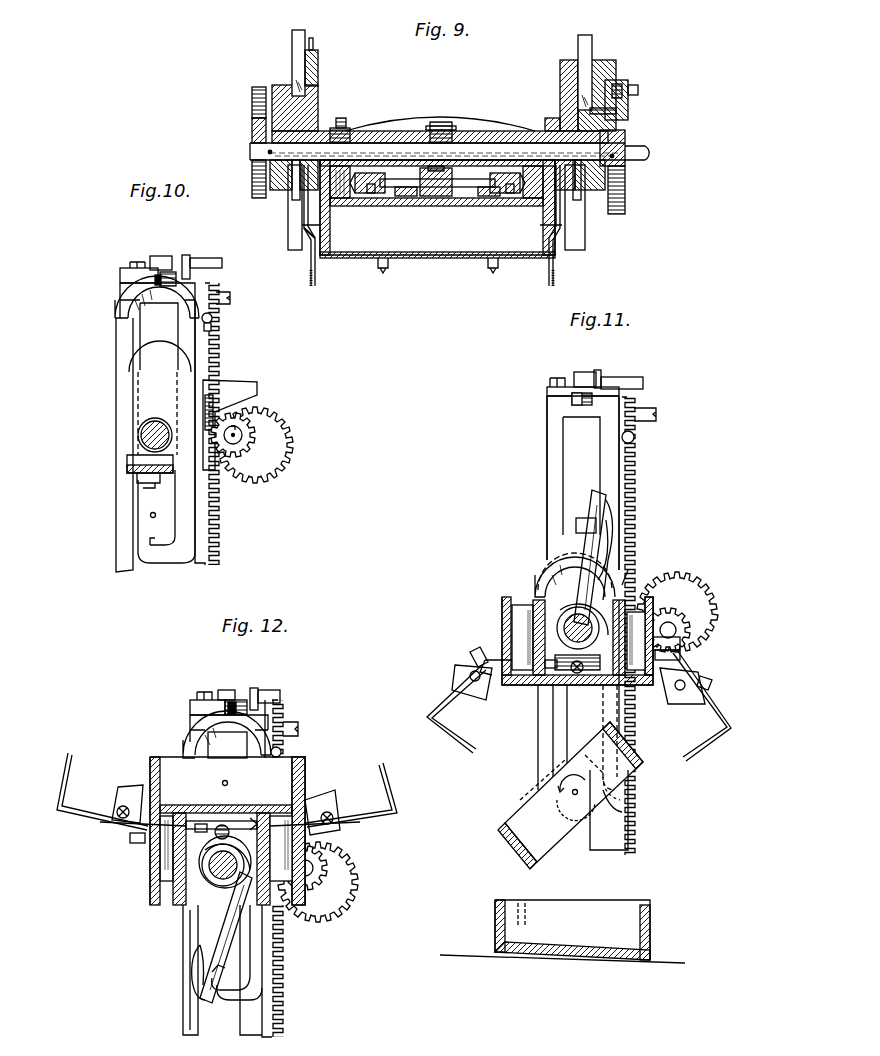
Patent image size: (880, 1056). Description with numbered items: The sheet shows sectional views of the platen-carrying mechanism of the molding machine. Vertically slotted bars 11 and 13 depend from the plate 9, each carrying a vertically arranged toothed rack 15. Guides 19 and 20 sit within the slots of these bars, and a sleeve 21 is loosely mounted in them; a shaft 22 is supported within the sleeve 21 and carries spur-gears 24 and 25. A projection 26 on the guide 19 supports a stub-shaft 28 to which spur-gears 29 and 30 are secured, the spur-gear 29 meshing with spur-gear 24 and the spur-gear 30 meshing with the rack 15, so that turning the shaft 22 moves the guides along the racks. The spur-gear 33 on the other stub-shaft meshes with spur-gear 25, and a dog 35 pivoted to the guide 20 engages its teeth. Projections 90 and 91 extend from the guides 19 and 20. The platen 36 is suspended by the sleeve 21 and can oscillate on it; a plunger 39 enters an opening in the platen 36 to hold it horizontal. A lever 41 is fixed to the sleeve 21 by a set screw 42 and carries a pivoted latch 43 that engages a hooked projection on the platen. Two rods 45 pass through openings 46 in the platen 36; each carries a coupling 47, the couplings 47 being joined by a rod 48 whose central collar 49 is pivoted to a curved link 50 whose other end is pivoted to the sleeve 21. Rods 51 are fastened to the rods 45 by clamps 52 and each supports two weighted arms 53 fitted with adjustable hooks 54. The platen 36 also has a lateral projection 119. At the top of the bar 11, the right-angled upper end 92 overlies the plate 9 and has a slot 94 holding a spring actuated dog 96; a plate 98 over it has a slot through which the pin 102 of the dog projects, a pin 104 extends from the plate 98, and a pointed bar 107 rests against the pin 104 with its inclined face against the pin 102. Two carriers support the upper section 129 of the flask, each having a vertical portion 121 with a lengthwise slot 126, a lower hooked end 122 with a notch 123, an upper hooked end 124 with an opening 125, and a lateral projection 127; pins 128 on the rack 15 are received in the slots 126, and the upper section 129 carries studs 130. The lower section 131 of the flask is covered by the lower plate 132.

In FIG. 10, the plate 9 is at (231, 299).
In FIG. 11, the plate 9 is at (657, 417).
In FIG. 12, the plate 9 is at (299, 730).
In FIG. 9, the vertically slotted bar 11 is at (288, 238).
In FIG. 10, the vertically slotted bar 11 is at (116, 341).
In FIG. 11, the vertically slotted bar 11 is at (545, 473).
In FIG. 12, the vertically slotted bar 11 is at (183, 952).
In FIG. 9, the vertically slotted bar 13 is at (585, 238).
In FIG. 10, the toothed rack 15 is at (218, 352).
In FIG. 11, the toothed rack 15 is at (636, 476).
In FIG. 12, the toothed rack 15 is at (284, 963).
In FIG. 9, the guide 19 is at (294, 82).
In FIG. 9, the guide 20 is at (590, 88).
In FIG. 9, the sleeve 21 is at (475, 133).
In FIG. 10, the sleeve 21 is at (148, 433).
In FIG. 11, the sleeve 21 is at (570, 618).
In FIG. 12, the sleeve 21 is at (208, 865).
In FIG. 9, the shaft 22 is at (398, 130).
In FIG. 10, the shaft 22 is at (148, 440).
In FIG. 11, the shaft 22 is at (566, 625).
In FIG. 12, the shaft 22 is at (215, 878).
In FIG. 9, the spur-gear 24 is at (250, 157).
In FIG. 9, the spur-gear 25 is at (624, 172).
In FIG. 10, the projection 26 is at (312, 455).
In FIG. 11, the projection 26 is at (677, 612).
In FIG. 12, the projection 26 is at (312, 900).
In FIG. 10, the stub-shaft 28 is at (240, 436).
In FIG. 11, the stub-shaft 28 is at (678, 633).
In FIG. 12, the stub-shaft 28 is at (310, 868).
In FIG. 10, the spur-gear 29 is at (272, 405).
In FIG. 11, the spur-gear 29 is at (694, 594).
In FIG. 12, the spur-gear 29 is at (356, 876).
In FIG. 10, the spur-gear 30 is at (243, 441).
In FIG. 11, the spur-gear 30 is at (676, 622).
In FIG. 12, the spur-gear 30 is at (318, 880).
In FIG. 9, the spur-gear 33 is at (626, 200).
In FIG. 9, the dog 35 is at (622, 80).
In FIG. 9, the platen 36 is at (432, 257).
In FIG. 11, the platen 36 is at (502, 598).
In FIG. 12, the platen 36 is at (150, 862).
In FIG. 9, the plunger 39 is at (252, 193).
In FIG. 9, the lever 41 is at (348, 126).
In FIG. 11, the lever 41 is at (596, 496).
In FIG. 12, the lever 41 is at (206, 1000).
In FIG. 9, the set screw 42 is at (342, 118).
In FIG. 11, the latch 43 is at (610, 512).
In FIG. 12, the latch 43 is at (190, 983).
In FIG. 9, the rod 45 is at (357, 196).
In FIG. 11, the rod 45 is at (490, 660).
In FIG. 12, the rod 45 is at (256, 818).
In FIG. 9, the opening 46 is at (371, 197).
In FIG. 9, the coupling 47 is at (390, 199).
In FIG. 11, the coupling 47 is at (586, 672).
In FIG. 12, the coupling 47 is at (238, 820).
In FIG. 9, the rod 48 is at (446, 192).
In FIG. 11, the rod 48 is at (570, 690).
In FIG. 12, the rod 48 is at (222, 818).
In FIG. 9, the collar 49 is at (430, 200).
In FIG. 11, the collar 49 is at (556, 688).
In FIG. 9, the curved link 50 is at (442, 122).
In FIG. 11, the curved link 50 is at (540, 688).
In FIG. 12, the curved link 50 is at (235, 848).
In FIG. 11, the rod 51 is at (462, 692).
In FIG. 12, the rod 51 is at (116, 808).
In FIG. 11, the clamp 52 is at (470, 656).
In FIG. 11, the weighted arm 53 is at (488, 698).
In FIG. 12, the weighted arm 53 is at (125, 787).
In FIG. 9, the hook 54 is at (436, 271).
In FIG. 11, the hook 54 is at (730, 735).
In FIG. 12, the hook 54 is at (60, 804).
In FIG. 9, the projection 90 is at (318, 67).
In FIG. 10, the projection 90 is at (130, 368).
In FIG. 11, the projection 90 is at (558, 554).
In FIG. 12, the projection 90 is at (227, 745).
In FIG. 9, the projection 91 is at (560, 80).
In FIG. 10, the upper end 92 is at (120, 284).
In FIG. 11, the upper end 92 is at (547, 400).
In FIG. 12, the upper end 92 is at (190, 718).
In FIG. 10, the slot 94 is at (170, 275).
In FIG. 11, the slot 94 is at (574, 398).
In FIG. 12, the slot 94 is at (240, 700).
In FIG. 10, the spring actuated dog 96 is at (157, 282).
In FIG. 11, the spring actuated dog 96 is at (598, 385).
In FIG. 12, the spring actuated dog 96 is at (230, 702).
In FIG. 10, the plate 98 is at (120, 270).
In FIG. 11, the plate 98 is at (547, 391).
In FIG. 12, the plate 98 is at (190, 705).
In FIG. 10, the pin 102 is at (160, 256).
In FIG. 11, the pin 102 is at (582, 372).
In FIG. 12, the pin 102 is at (220, 690).
In FIG. 10, the pin 104 is at (190, 260).
In FIG. 11, the pin 104 is at (620, 378).
In FIG. 12, the pin 104 is at (258, 690).
In FIG. 10, the pointed bar 107 is at (222, 264).
In FIG. 11, the pointed bar 107 is at (644, 388).
In FIG. 12, the pointed bar 107 is at (280, 699).
In FIG. 11, the projection 119 is at (690, 660).
In FIG. 12, the projection 119 is at (130, 840).
In FIG. 9, the vertical portion 121 is at (304, 212).
In FIG. 10, the vertical portion 121 is at (195, 515).
In FIG. 11, the vertical portion 121 is at (625, 722).
In FIG. 12, the vertical portion 121 is at (262, 937).
In FIG. 9, the lower hooked end 122 is at (431, 282).
In FIG. 10, the lower hooked end 122 is at (165, 563).
In FIG. 11, the lower hooked end 122 is at (622, 810).
In FIG. 12, the lower hooked end 122 is at (255, 992).
In FIG. 9, the notch 123 is at (307, 250).
In FIG. 10, the notch 123 is at (156, 533).
In FIG. 11, the notch 123 is at (572, 800).
In FIG. 12, the notch 123 is at (224, 962).
In FIG. 10, the upper hooked end 124 is at (115, 315).
In FIG. 11, the upper hooked end 124 is at (535, 563).
In FIG. 12, the upper hooked end 124 is at (183, 742).
In FIG. 10, the opening 125 is at (160, 285).
In FIG. 11, the opening 125 is at (576, 526).
In FIG. 12, the opening 125 is at (205, 722).
In FIG. 10, the slot 126 is at (211, 330).
In FIG. 11, the slot 126 is at (626, 578).
In FIG. 12, the slot 126 is at (282, 760).
In FIG. 10, the projection 127 is at (246, 384).
In FIG. 11, the projection 127 is at (682, 645).
In FIG. 10, the pin 128 is at (213, 318).
In FIG. 11, the pin 128 is at (634, 438).
In FIG. 12, the pin 128 is at (282, 752).
In FIG. 9, the upper section of the flask 129 is at (465, 259).
In FIG. 11, the upper section of the flask 129 is at (525, 845).
In FIG. 12, the upper section of the flask 129 is at (305, 768).
In FIG. 10, the stud 130 is at (150, 514).
In FIG. 11, the stud 130 is at (572, 792).
In FIG. 12, the stud 130 is at (225, 780).
In FIG. 11, the lower section of the flask 131 is at (650, 921).
In FIG. 11, the lower plate 132 is at (602, 960).